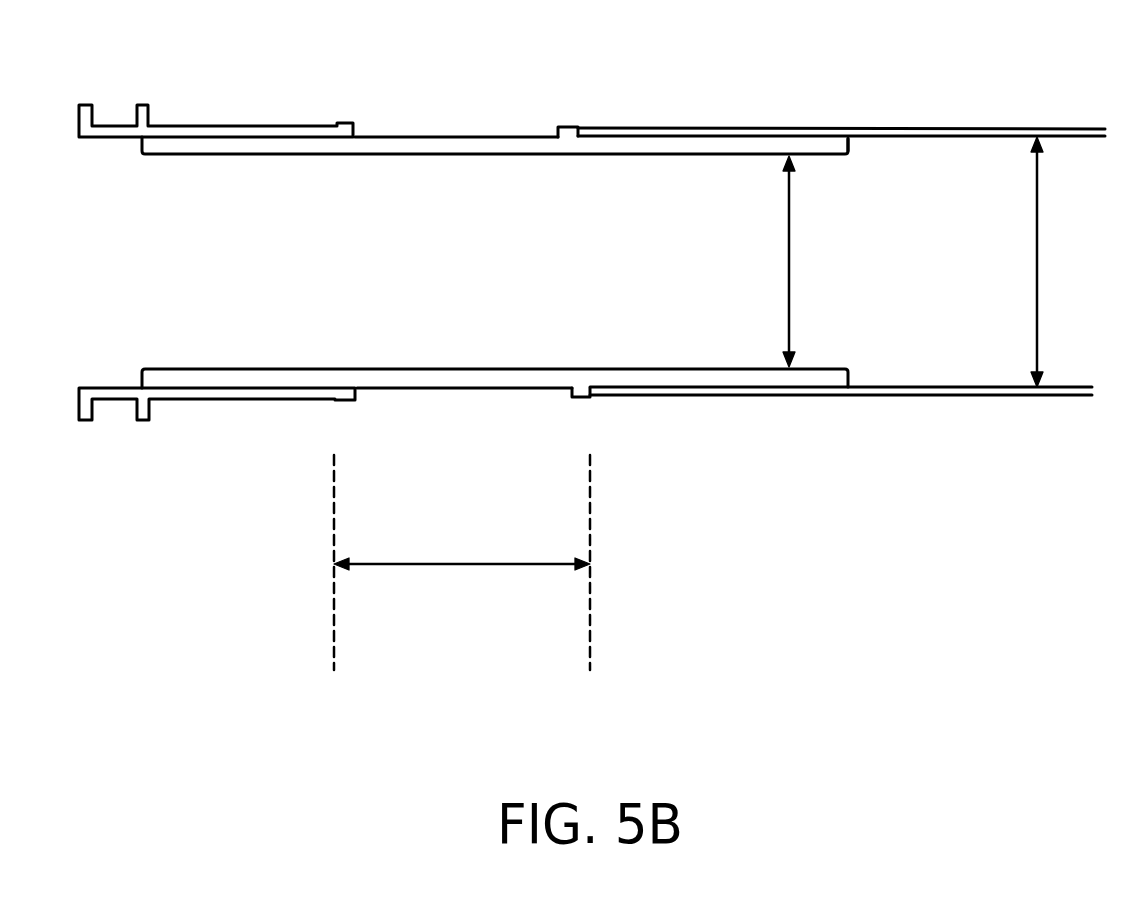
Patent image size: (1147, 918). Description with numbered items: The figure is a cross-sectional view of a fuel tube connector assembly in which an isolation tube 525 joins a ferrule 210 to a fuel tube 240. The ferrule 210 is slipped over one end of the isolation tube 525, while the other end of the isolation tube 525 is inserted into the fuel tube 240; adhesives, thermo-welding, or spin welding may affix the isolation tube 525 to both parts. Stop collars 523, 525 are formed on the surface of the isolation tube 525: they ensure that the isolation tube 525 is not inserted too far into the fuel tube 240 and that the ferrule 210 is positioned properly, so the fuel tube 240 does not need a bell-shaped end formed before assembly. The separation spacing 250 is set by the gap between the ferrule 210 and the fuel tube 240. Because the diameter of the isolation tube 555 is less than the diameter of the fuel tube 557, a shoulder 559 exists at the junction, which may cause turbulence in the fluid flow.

The ferrule 210 is at (227, 125).
The fuel tube 240 is at (935, 136).
The stop collar 523 is at (358, 128).
The isolation tube 525 is at (558, 130).
The diameter of the isolation tube 555 is at (788, 303).
The diameter of the fuel tube 557 is at (1035, 298).
The shoulder 559 is at (852, 142).
The separation spacing 250 is at (482, 563).